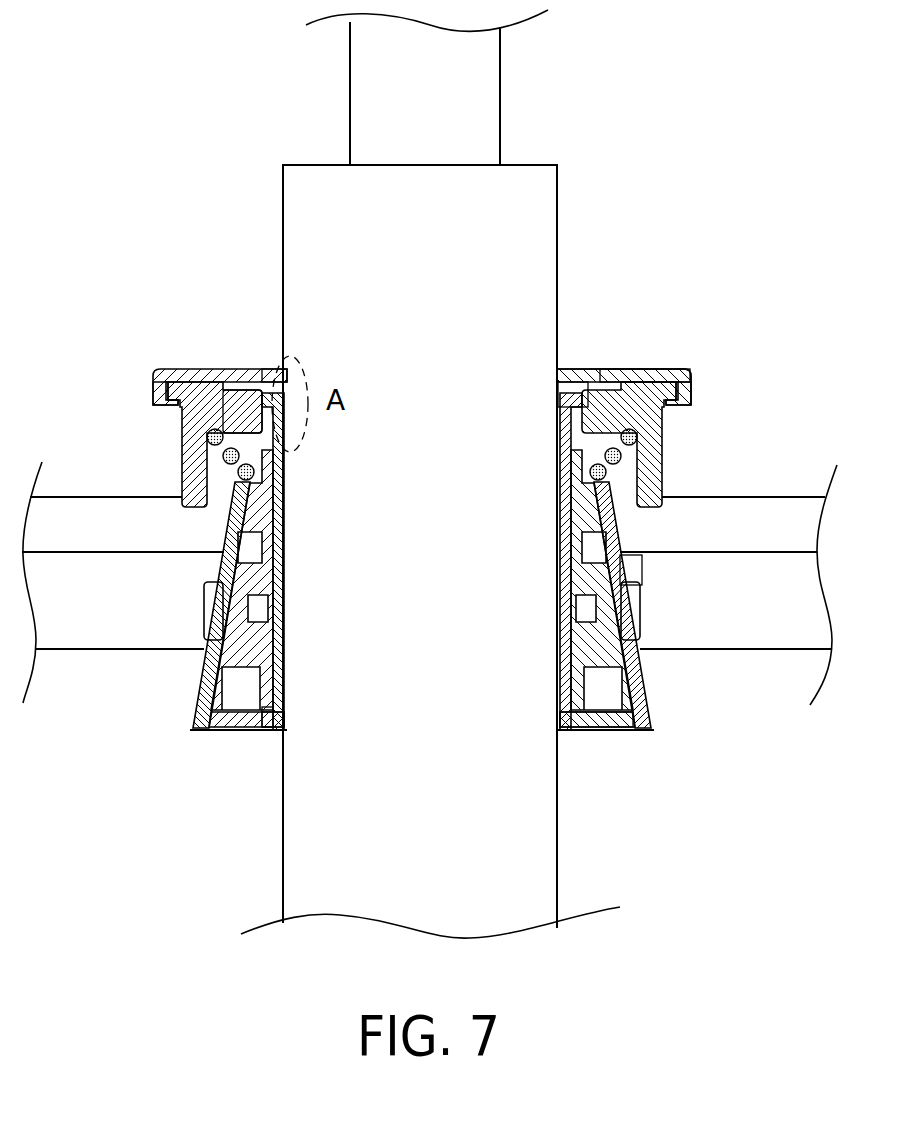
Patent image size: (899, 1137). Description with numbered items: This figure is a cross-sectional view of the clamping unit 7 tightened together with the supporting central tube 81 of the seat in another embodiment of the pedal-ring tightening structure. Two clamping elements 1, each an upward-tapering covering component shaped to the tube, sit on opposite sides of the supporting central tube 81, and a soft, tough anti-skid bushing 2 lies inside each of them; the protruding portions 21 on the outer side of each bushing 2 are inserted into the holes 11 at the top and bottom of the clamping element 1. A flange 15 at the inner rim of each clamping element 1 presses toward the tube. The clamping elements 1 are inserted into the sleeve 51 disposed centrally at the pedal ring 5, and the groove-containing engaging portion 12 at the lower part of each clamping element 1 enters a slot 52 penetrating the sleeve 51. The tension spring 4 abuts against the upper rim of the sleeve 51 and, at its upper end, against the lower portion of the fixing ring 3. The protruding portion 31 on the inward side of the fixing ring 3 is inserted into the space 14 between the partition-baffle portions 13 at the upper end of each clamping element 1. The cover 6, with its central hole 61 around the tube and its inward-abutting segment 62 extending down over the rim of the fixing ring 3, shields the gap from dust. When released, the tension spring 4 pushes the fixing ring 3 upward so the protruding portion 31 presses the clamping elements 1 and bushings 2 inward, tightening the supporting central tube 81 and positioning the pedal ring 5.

The clamping element 1 is at (598, 655).
The hole 11 is at (268, 737).
The groove-containing engaging portion 12 is at (628, 607).
The partition-baffle portion 13 is at (657, 378).
The space 14 is at (590, 380).
The flange 15 is at (557, 718).
The bushing 2 is at (560, 450).
The protruding portion 21 is at (227, 700).
The fixing ring 3 is at (185, 370).
The protruding portion 31 is at (247, 418).
The tension spring 4 is at (217, 457).
The pedal ring 5 is at (80, 523).
The sleeve 51 is at (200, 692).
The slot 52 is at (637, 570).
The cover 6 is at (222, 369).
The hole 61 is at (270, 368).
The inward-abutting segment 62 is at (162, 416).
The clamping unit 7 is at (720, 345).
The supporting central tube 81 is at (300, 243).